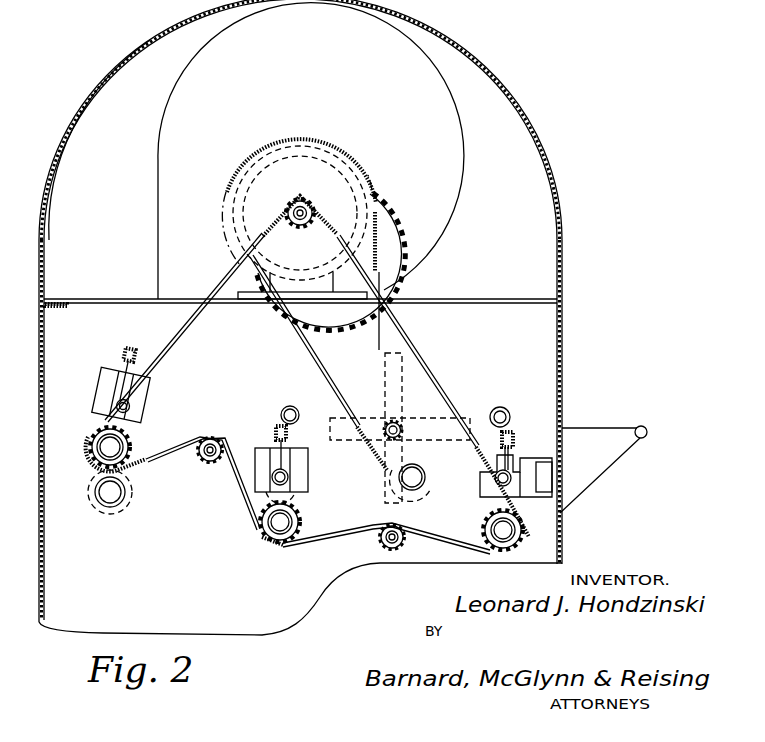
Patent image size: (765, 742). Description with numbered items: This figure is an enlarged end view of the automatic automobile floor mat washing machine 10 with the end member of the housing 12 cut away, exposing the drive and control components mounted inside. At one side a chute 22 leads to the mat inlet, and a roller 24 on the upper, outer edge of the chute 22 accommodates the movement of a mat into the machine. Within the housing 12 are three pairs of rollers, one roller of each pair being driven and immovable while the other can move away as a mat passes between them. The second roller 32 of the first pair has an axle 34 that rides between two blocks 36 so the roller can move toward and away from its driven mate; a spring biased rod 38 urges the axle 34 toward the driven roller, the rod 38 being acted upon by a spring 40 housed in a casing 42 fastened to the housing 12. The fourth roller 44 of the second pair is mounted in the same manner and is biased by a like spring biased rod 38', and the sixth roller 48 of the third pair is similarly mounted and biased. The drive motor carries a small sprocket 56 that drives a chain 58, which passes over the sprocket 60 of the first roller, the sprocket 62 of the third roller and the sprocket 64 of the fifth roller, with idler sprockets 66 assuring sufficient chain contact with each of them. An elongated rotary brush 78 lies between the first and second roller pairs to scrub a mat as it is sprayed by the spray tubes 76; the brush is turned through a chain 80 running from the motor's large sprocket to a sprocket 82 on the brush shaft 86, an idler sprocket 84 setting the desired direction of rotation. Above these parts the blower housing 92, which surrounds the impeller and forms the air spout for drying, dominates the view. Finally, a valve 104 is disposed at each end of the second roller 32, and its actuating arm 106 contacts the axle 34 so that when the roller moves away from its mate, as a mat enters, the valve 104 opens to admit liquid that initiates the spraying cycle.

The automatic automobile floor mat washing machine 10 is at (532, 120).
The housing 12 is at (97, 88).
The chute 22 is at (613, 465).
The roller 24 is at (648, 428).
The second roller 32 is at (513, 462).
The axle 34 is at (530, 473).
The blocks 36 is at (490, 508).
The spring biased rod 38 is at (487, 440).
The spring biased rod 38' is at (183, 413).
The spring 40 is at (527, 460).
The casing 42 is at (131, 352).
The fourth roller 44 is at (298, 427).
The sixth roller 48 is at (100, 386).
The small sprocket 56 is at (308, 200).
The chain 58 is at (378, 222).
The sprocket 60 is at (524, 540).
The sprocket 62 is at (280, 535).
The sprocket 64 is at (90, 460).
The idler sprockets 66 is at (208, 466).
The spray tubes 76 is at (290, 406).
The elongated rotary brush 78 is at (403, 387).
The chain 80 is at (390, 270).
The sprocket 82 is at (410, 420).
The idler sprocket 84 is at (426, 469).
The shaft 86 is at (388, 424).
The blower housing 92 is at (158, 160).
The valves 104 is at (545, 492).
The actuating arm 106 is at (530, 462).